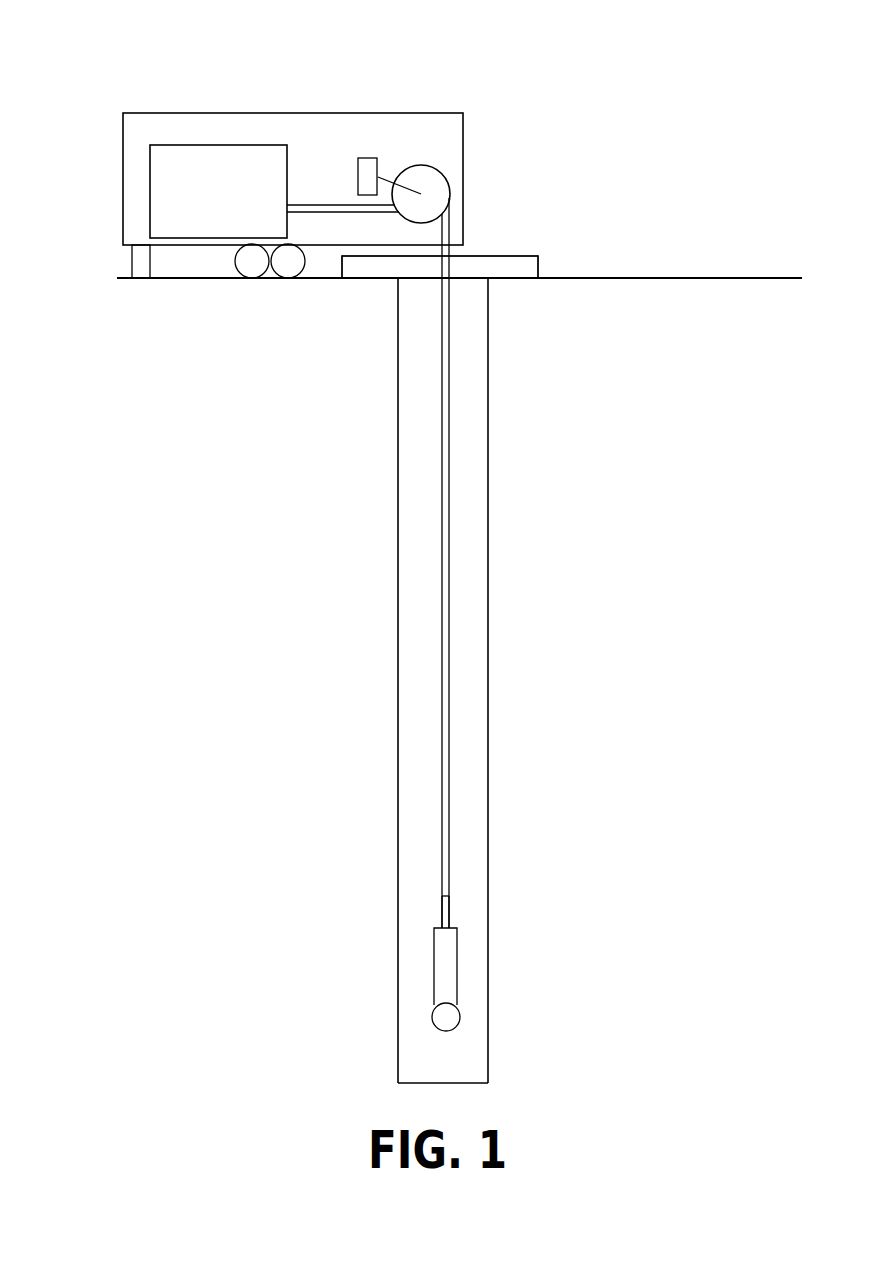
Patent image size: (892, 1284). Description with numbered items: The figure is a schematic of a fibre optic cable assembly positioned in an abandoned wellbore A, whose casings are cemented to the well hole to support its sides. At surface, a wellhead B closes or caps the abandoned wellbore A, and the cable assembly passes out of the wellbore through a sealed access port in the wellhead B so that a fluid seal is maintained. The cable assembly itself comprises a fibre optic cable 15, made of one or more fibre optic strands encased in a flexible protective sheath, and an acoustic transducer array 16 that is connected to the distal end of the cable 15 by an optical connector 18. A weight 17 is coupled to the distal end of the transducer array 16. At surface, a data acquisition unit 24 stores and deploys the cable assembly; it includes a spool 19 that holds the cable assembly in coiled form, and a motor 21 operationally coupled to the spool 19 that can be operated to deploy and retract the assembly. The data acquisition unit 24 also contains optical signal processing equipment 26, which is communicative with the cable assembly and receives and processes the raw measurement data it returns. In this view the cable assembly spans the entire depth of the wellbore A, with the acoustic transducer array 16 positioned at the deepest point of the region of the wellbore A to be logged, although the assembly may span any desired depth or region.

The surface data acquisition unit 24 is at (123, 190).
The optical signal processing equipment 26 is at (207, 145).
The motor 21 is at (365, 158).
The spool 19 is at (421, 165).
The wellhead B is at (538, 265).
The abandoned wellbore A is at (398, 472).
The fibre optic cable 15 is at (442, 716).
The optical connector 18 is at (442, 913).
The acoustic transducer array 16 is at (447, 961).
The weight 17 is at (447, 1016).